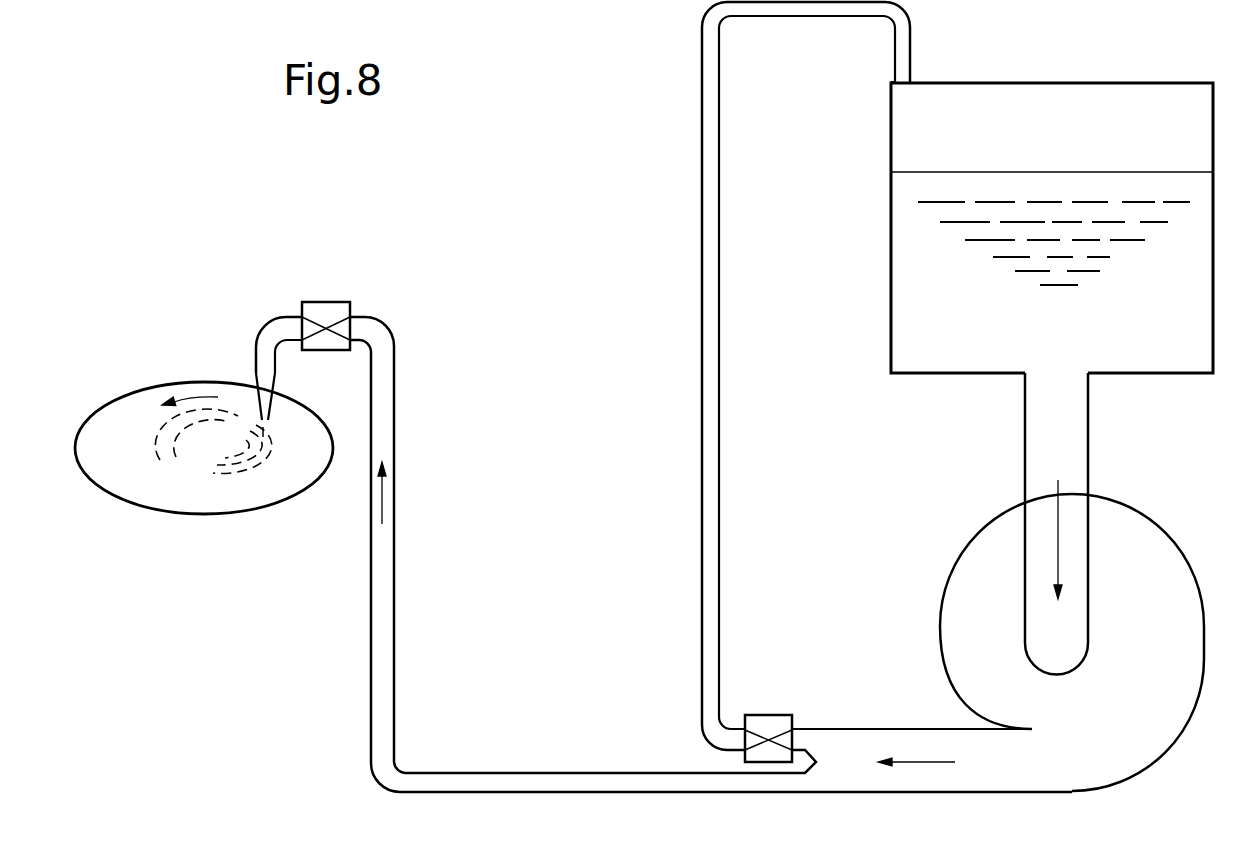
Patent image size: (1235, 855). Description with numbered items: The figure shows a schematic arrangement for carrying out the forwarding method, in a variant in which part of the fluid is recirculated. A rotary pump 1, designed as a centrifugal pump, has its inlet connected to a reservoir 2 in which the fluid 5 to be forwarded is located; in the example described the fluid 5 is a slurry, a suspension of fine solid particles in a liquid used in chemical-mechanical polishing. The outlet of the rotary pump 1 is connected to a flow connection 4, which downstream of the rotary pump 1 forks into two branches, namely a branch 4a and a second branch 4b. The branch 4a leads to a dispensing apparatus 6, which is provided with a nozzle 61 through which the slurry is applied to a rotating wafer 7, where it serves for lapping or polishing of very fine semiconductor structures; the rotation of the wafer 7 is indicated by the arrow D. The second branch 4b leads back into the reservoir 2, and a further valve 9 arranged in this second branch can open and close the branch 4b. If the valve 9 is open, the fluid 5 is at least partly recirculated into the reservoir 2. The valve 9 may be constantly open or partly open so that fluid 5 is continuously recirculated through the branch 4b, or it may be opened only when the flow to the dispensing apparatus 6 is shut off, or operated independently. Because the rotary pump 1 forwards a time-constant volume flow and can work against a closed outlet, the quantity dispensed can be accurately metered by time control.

The rotary pump 1 is at (941, 577).
The reservoir 2 is at (1014, 82).
The flow connection 4 is at (885, 716).
The branch 4a is at (544, 795).
The second branch 4b is at (718, 390).
The fluid 5 is at (918, 266).
The dispensing apparatus 6 is at (247, 321).
The nozzle 61 is at (255, 400).
The wafer 7 is at (170, 496).
The valve 9 is at (765, 713).
The arrow D is at (207, 398).